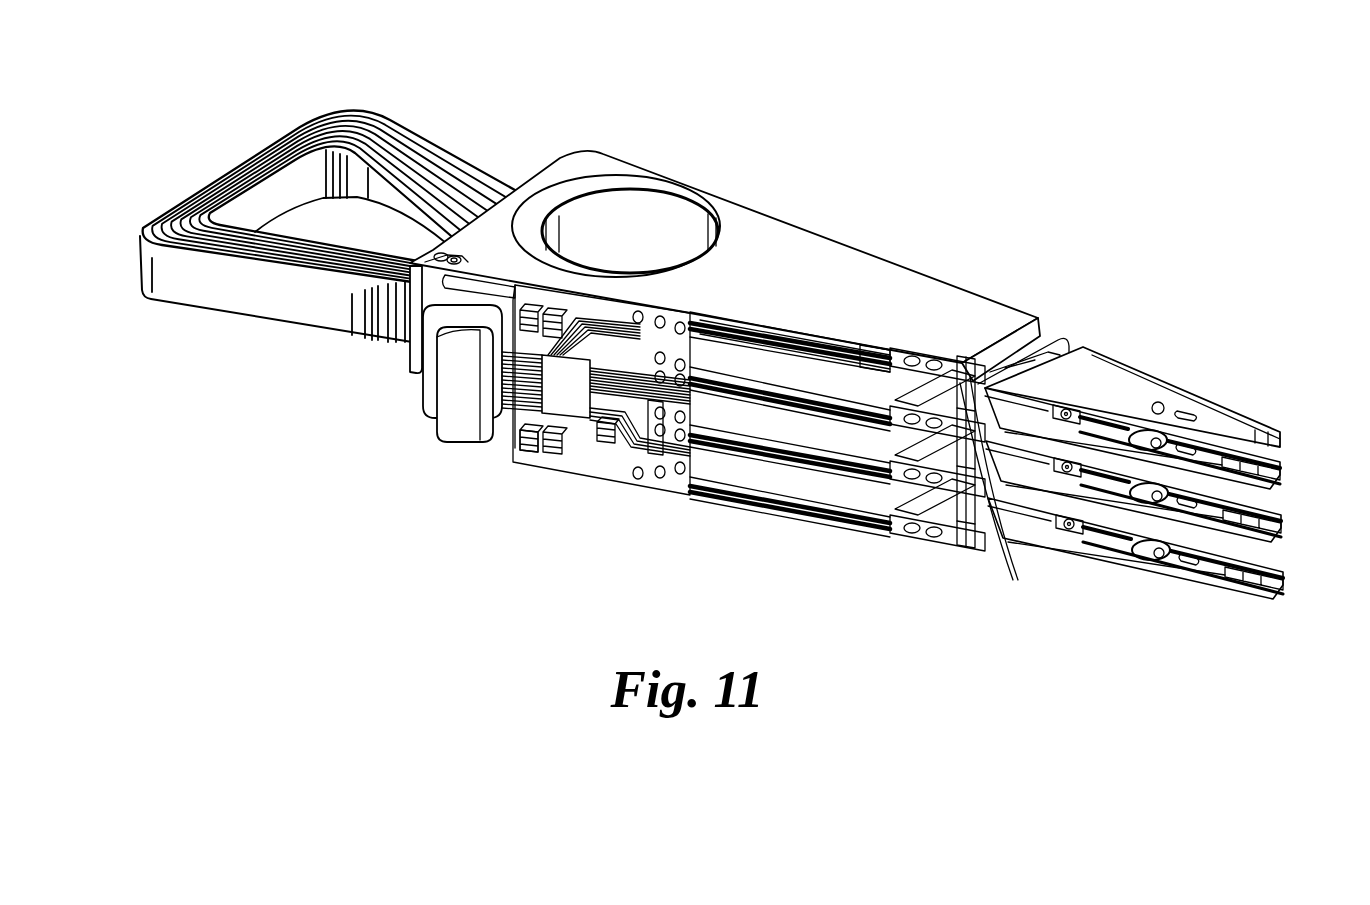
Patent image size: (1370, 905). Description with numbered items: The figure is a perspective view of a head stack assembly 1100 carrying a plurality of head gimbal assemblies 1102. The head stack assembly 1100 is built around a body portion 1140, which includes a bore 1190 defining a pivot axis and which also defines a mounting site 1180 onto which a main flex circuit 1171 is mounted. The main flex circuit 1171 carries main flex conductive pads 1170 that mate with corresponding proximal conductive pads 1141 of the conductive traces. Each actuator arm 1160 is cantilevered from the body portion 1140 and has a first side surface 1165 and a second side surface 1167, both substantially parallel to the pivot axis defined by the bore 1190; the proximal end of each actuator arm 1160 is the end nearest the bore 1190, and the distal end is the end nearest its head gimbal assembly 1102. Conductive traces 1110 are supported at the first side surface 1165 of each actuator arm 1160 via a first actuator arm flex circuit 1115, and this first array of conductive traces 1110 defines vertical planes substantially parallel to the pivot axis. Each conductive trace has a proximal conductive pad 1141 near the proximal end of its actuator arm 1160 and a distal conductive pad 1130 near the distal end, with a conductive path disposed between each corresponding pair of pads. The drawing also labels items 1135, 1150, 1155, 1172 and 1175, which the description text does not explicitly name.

The head stack assembly 1100 is at (247, 417).
The head gimbal assembly 1102 is at (723, 323).
The conductive traces 1110 is at (870, 347).
The first actuator arm flex circuit 1115 is at (772, 327).
The distal conductive pad 1130 is at (961, 510).
The base plate 1135 is at (897, 478).
The body portion 1140 is at (725, 254).
The proximal conductive pad 1141 is at (678, 322).
The voice coil 1150 is at (422, 144).
The slider 1155 is at (1274, 564).
The actuator arm 1160 is at (1170, 382).
The first side surface 1165 is at (818, 337).
The second side surface 1167 is at (930, 270).
The main flex conductive pads 1170 is at (655, 480).
The main flex circuit 1171 is at (557, 466).
The bracket 1172 is at (1067, 334).
The wire 1175 is at (1005, 493).
The mounting site 1180 is at (579, 389).
The bore 1190 is at (663, 212).